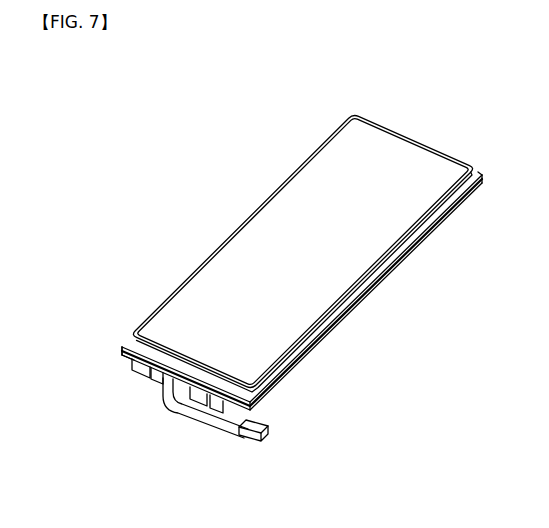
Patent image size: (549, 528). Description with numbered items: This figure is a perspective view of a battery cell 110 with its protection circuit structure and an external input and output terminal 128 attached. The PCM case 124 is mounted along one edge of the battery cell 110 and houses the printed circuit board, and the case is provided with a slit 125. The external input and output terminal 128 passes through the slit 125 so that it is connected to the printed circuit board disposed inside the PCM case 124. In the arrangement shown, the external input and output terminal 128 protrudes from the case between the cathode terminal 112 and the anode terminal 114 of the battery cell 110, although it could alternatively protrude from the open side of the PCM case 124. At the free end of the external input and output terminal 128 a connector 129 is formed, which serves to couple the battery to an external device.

The battery cell 110 is at (412, 260).
The cathode terminal 112 is at (220, 406).
The anode terminal 114 is at (137, 372).
The PCM case 124 is at (120, 354).
The slit 125 is at (155, 379).
The external input and output terminal 128 is at (226, 430).
The connector 129 is at (268, 430).